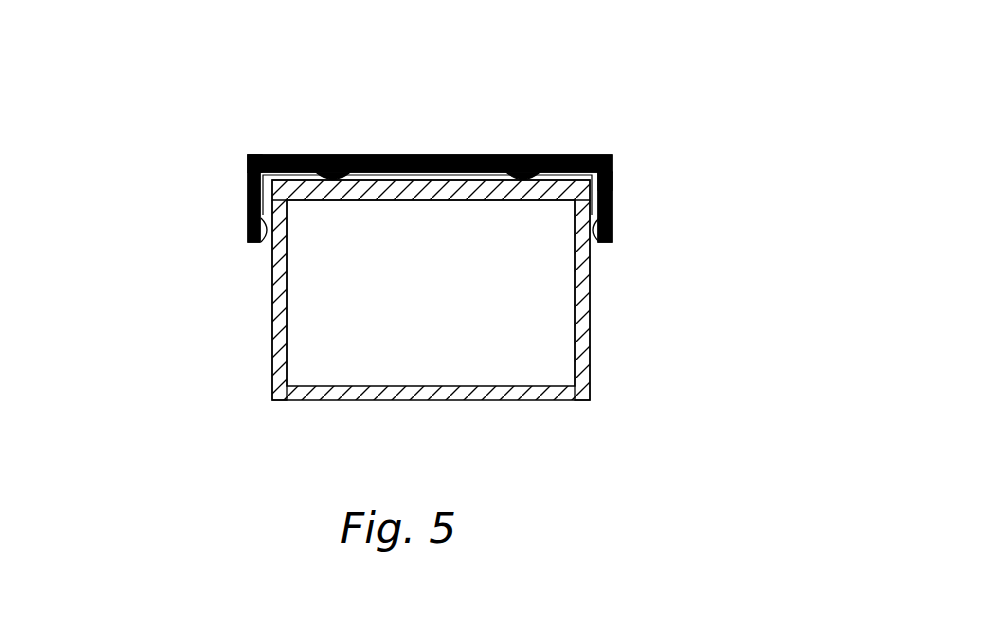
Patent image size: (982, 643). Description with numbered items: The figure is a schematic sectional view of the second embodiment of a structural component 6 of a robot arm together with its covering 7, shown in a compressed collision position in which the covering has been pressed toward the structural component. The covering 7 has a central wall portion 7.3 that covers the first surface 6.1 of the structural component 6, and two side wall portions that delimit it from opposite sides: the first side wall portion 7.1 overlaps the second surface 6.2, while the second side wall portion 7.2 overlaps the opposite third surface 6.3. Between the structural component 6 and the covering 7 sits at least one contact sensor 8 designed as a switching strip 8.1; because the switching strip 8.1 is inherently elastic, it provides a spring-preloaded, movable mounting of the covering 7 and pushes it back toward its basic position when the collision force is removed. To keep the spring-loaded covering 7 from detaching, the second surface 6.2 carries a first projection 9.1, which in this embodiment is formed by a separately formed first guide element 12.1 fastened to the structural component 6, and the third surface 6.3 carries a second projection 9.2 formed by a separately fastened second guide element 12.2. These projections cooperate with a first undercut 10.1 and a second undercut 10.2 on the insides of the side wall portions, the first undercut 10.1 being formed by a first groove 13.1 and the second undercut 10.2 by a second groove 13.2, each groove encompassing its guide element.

The structural component 6 is at (523, 392).
The first surface 6.1 is at (613, 172).
The second surface 6.2 is at (278, 340).
The third surface 6.3 is at (590, 338).
The covering 7 is at (432, 157).
The first side wall portion 7.1 is at (247, 197).
The second side wall portion 7.2 is at (613, 210).
The central wall portion 7.3 is at (470, 157).
The contact sensor 8 is at (476, 122).
The switching strip 8.1 is at (331, 157).
The first projection 9.1 is at (235, 87).
The first guide element 12.1 is at (250, 157).
The second projection 9.2 is at (732, 166).
The second guide element 12.2 is at (613, 190).
The first undercut 10.1 is at (160, 283).
The first groove 13.1 is at (262, 245).
The second undercut 10.2 is at (703, 276).
The second groove 13.2 is at (598, 245).